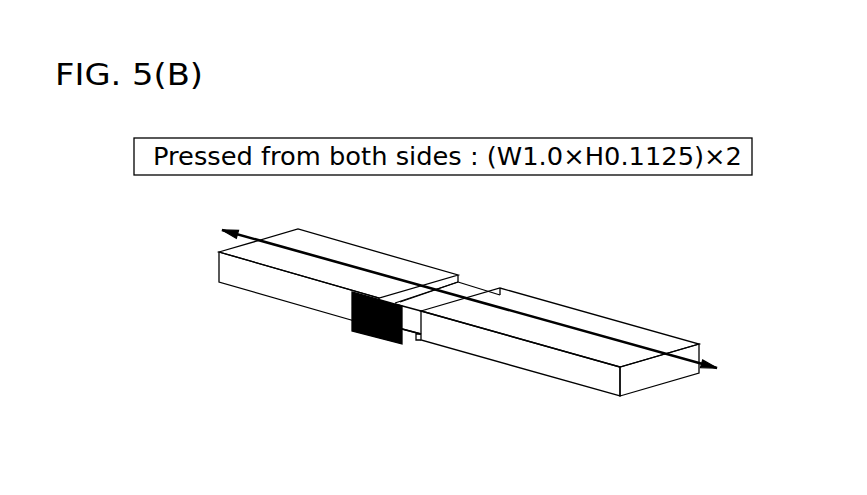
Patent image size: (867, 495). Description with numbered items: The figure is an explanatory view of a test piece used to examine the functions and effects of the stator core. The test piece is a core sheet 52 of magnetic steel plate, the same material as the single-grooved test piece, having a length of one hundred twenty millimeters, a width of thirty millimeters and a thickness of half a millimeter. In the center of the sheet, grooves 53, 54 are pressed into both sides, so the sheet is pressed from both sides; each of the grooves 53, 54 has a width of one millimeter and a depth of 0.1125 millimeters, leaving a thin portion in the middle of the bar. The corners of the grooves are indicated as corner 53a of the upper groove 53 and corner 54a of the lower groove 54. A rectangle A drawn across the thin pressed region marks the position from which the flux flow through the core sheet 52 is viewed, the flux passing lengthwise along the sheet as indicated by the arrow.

The core sheet 52 is at (650, 319).
The groove 53 is at (469, 291).
The corner of groove 53a is at (408, 296).
The groove 54 is at (415, 333).
The corner of groove 54a is at (406, 340).
The rectangle A is at (368, 340).